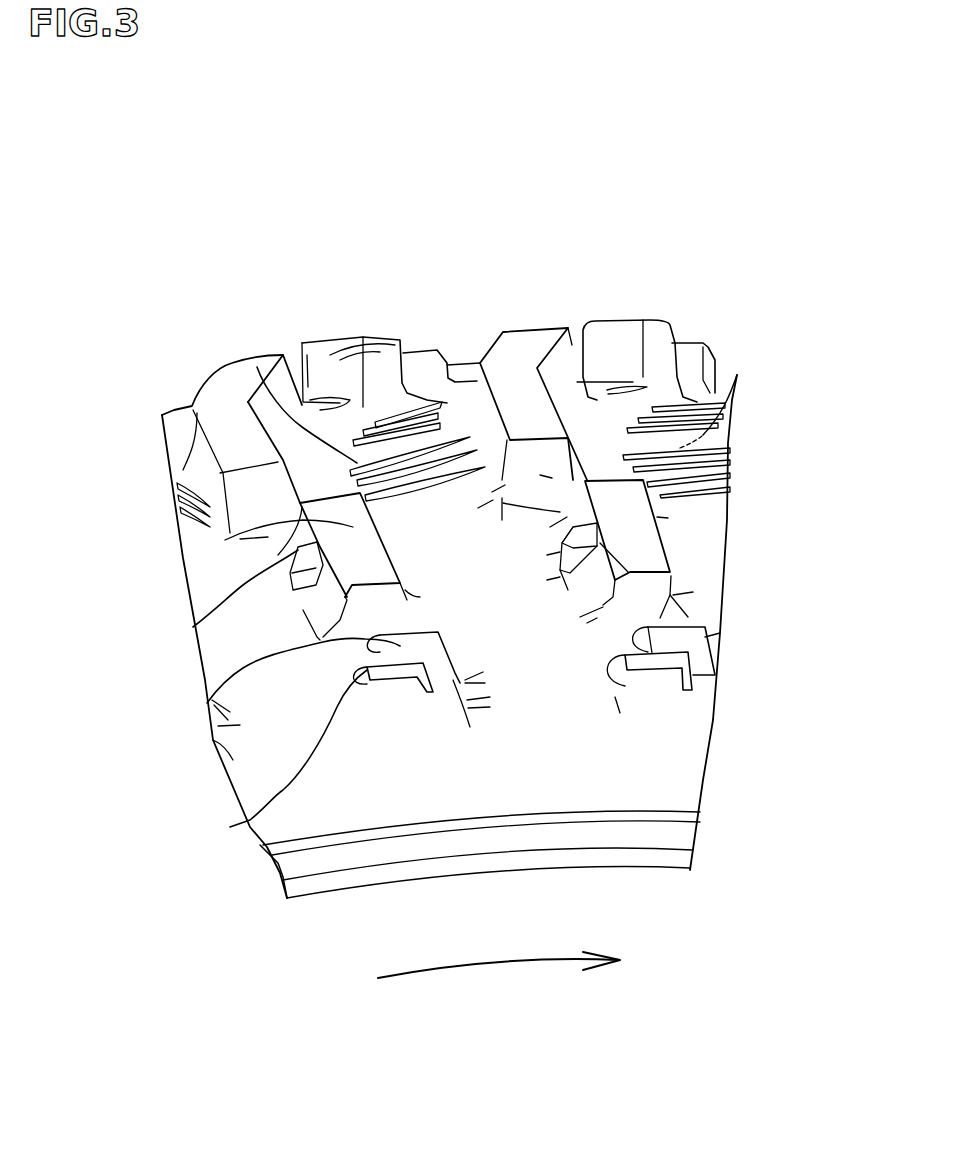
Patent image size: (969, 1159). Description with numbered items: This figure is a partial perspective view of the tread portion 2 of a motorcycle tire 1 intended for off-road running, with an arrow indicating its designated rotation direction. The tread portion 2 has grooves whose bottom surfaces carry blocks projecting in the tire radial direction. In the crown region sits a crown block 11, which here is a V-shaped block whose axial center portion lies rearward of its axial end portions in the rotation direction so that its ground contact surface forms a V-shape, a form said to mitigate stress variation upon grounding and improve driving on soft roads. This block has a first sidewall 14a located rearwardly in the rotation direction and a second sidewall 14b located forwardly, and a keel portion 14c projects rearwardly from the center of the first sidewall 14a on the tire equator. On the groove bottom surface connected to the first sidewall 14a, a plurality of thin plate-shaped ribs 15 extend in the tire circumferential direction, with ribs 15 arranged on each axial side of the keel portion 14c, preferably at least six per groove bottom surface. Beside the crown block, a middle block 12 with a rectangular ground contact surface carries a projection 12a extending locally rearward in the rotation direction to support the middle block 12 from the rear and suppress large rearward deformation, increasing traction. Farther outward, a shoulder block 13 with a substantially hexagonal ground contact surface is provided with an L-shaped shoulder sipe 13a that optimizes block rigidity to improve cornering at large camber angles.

The tire 1 is at (724, 188).
The tread portion 2 is at (593, 283).
The crown block 11 is at (520, 350).
The middle block 12 is at (232, 535).
The projection 12a is at (193, 627).
The shoulder block 13 is at (230, 827).
The shoulder sipe 13a is at (207, 703).
The first sidewall 14a is at (488, 435).
The second sidewall 14b is at (556, 377).
The keel portion 14c is at (465, 375).
The rib 15 is at (322, 460).